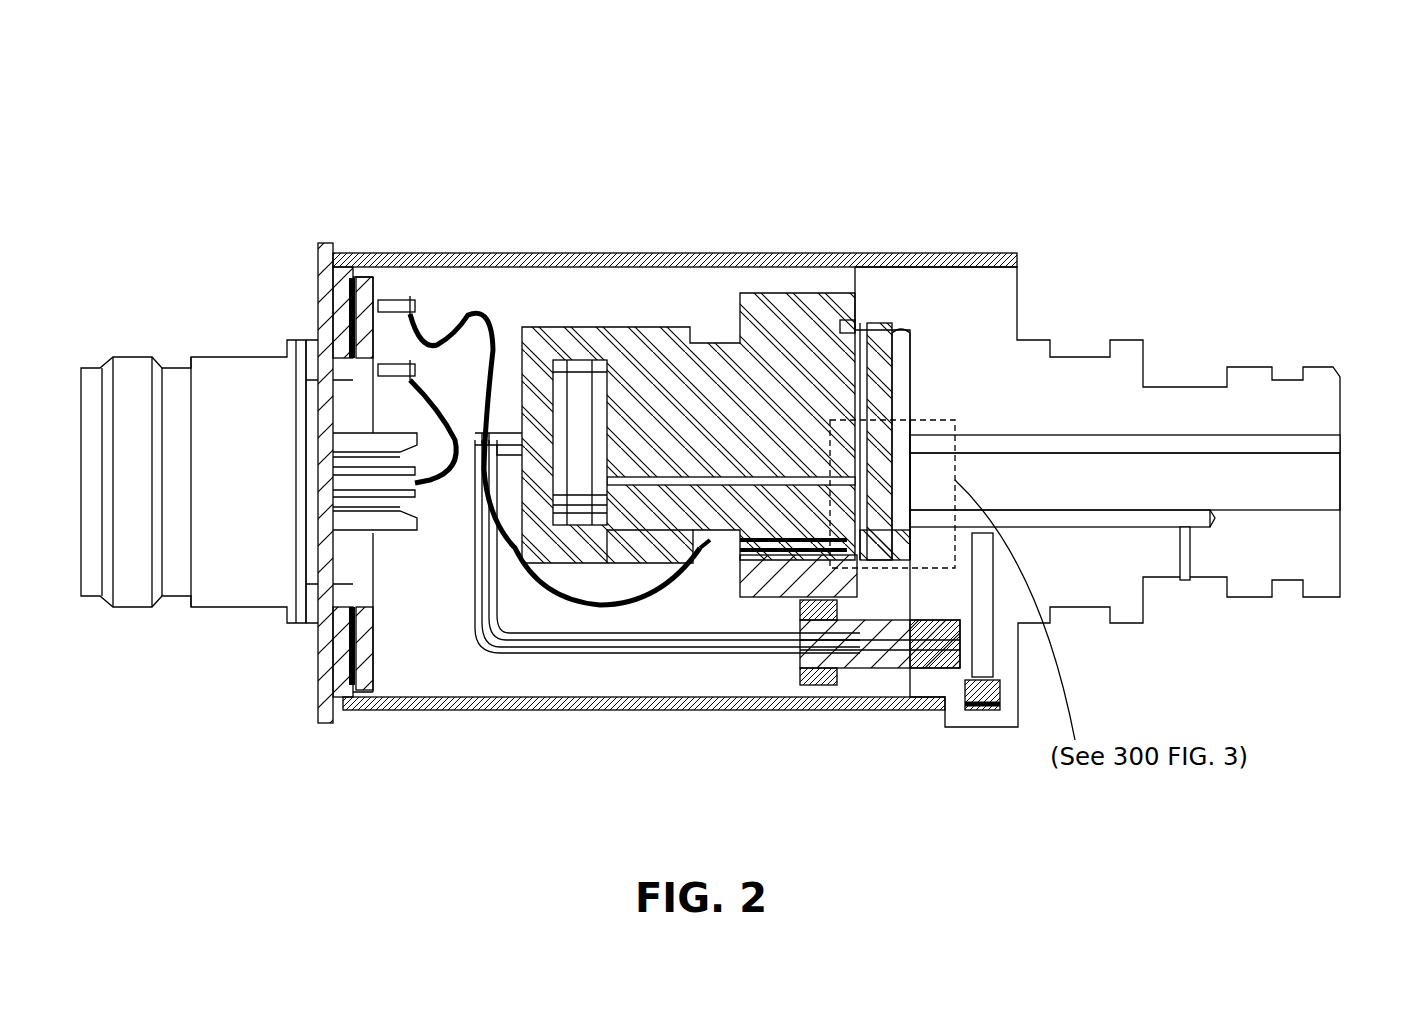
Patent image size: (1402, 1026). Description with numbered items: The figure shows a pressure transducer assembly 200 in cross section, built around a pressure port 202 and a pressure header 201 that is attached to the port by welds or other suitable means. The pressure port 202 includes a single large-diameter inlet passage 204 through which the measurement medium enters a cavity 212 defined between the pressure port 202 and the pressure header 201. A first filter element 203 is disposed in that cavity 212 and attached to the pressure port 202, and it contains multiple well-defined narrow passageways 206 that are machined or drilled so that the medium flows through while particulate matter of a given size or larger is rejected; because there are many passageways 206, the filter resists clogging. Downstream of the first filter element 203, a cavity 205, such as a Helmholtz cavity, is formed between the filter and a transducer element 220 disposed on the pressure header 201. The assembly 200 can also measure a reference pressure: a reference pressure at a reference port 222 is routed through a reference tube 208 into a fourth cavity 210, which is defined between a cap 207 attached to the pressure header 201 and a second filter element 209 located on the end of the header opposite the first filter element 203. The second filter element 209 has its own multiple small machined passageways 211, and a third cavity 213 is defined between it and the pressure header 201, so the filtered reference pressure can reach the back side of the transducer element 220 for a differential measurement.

The pressure transducer assembly 200 is at (668, 58).
The pressure header 201 is at (690, 405).
The pressure port 202 is at (1112, 400).
The first filter element 203 is at (873, 399).
The inlet passage 204 is at (1322, 445).
The cavity 205 is at (865, 346).
The passageways 206 is at (888, 535).
The cap 207 is at (535, 472).
The reference tube 208 is at (707, 648).
The second filter element 209 is at (578, 428).
The fourth cavity 210 is at (565, 515).
The passageways 211 is at (580, 513).
The cavity 212 is at (898, 537).
The third cavity 213 is at (600, 515).
The transducer element 220 is at (847, 493).
The reference port 222 is at (1185, 582).